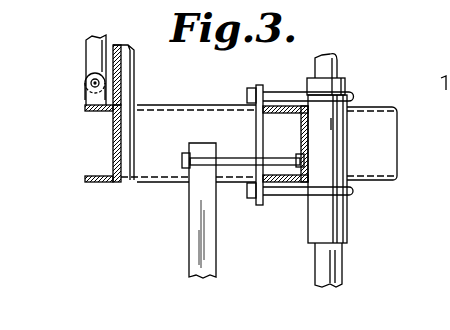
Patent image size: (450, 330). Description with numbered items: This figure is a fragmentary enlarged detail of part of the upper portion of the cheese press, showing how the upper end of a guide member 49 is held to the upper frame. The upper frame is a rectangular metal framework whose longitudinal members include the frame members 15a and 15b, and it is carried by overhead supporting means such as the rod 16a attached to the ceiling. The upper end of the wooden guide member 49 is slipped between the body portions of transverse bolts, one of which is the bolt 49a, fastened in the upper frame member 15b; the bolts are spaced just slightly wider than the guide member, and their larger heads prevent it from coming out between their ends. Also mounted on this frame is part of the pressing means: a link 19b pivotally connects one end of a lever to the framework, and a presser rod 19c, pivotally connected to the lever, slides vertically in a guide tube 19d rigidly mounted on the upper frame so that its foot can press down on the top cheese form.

The longitudinal frame member 15a is at (113, 150).
The upper frame member 15b is at (310, 142).
The rod 16a is at (135, 68).
The link 19b is at (86, 50).
The presser rod 19c is at (337, 63).
The guide tube 19d is at (347, 222).
The guide member 49 is at (189, 243).
The bolt 49a is at (236, 133).